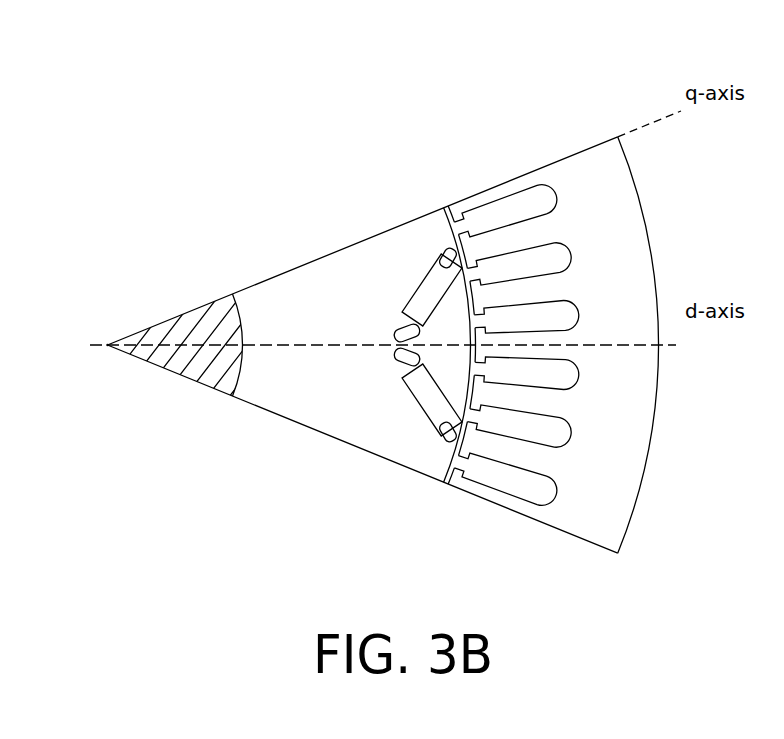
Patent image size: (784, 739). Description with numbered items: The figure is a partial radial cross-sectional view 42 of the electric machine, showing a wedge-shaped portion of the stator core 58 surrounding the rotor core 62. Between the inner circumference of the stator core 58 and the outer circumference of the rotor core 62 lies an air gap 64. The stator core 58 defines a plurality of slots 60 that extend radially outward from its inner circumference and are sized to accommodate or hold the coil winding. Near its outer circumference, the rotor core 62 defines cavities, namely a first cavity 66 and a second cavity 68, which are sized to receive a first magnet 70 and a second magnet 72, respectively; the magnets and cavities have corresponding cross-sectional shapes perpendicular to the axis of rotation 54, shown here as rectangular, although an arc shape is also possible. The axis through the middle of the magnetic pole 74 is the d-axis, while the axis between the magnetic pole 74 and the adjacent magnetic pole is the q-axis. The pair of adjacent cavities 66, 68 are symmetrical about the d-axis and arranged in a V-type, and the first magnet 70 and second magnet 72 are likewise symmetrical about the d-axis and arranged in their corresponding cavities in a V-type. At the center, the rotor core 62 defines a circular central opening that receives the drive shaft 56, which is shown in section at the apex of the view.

The partial radial cross-sectional view 42 is at (208, 169).
The axis of rotation 54 is at (107, 345).
The drive shaft 56 is at (190, 333).
The stator core 58 is at (615, 224).
The slots 60 is at (533, 320).
The rotor core 62 is at (301, 308).
The air gap 64 is at (456, 467).
The first cavity 66 is at (440, 255).
The second cavity 68 is at (419, 406).
The first magnet 70 is at (421, 289).
The second magnet 72 is at (417, 383).
The magnetic pole 74 is at (368, 322).